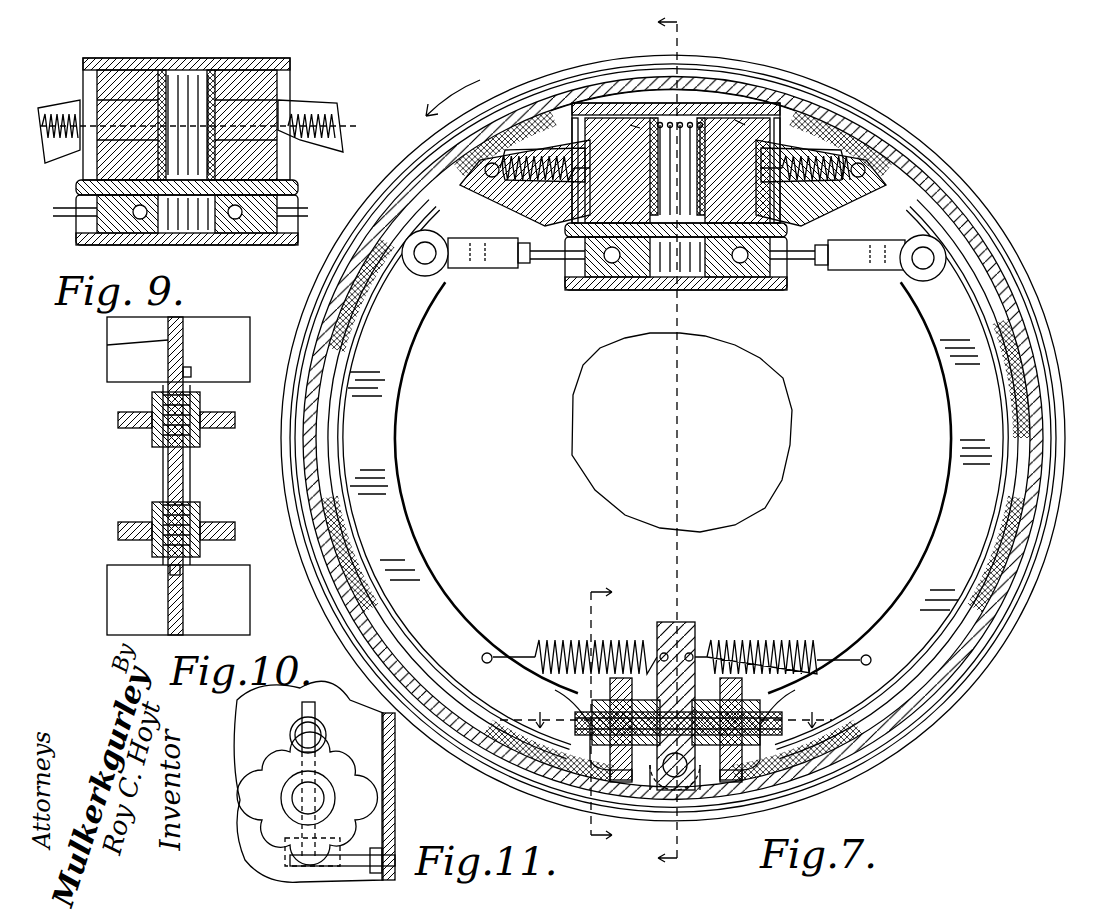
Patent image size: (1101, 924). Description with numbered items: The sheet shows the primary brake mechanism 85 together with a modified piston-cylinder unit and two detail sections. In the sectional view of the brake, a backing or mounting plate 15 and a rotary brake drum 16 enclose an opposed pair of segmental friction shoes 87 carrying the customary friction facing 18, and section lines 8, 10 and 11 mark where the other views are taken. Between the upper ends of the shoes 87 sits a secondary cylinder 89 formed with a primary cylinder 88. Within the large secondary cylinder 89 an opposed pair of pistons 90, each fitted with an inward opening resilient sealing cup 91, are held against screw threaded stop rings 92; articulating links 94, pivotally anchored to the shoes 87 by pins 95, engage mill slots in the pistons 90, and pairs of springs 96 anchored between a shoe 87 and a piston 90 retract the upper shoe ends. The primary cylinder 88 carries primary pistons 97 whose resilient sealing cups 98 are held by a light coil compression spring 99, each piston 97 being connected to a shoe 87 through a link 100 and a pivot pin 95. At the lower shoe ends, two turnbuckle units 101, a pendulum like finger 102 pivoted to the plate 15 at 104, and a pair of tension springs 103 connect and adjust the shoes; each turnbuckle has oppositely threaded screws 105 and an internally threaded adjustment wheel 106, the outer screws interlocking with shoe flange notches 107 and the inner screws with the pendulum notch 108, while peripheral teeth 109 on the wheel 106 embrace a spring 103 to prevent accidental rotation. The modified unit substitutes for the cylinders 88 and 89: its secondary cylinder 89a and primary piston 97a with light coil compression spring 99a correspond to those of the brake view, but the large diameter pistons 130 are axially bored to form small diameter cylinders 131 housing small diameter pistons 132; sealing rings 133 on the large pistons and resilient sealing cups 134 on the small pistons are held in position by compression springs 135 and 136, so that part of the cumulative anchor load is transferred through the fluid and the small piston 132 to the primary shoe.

In FIG. 7, the section line 8- 8 is at (681, 441).
In FIG. 7, the section line 10— 10 is at (800, 580).
In FIG. 7, the section line 11— 11 is at (590, 710).
In FIG. 7, the backing or mounting plate 15 is at (792, 470).
In FIG. 11, the backing or mounting plate 15 is at (396, 786).
In FIG. 7, the rotary brake drum 16 is at (320, 537).
In FIG. 7, the friction facing 18 is at (345, 330).
In FIG. 7, the brake mechanism 85 is at (952, 727).
In FIG. 7, the segmental friction shoes 87 is at (390, 440).
In FIG. 10, the segmental friction shoes 87 is at (107, 368).
In FIG. 7, the primary cylinder 88 is at (815, 183).
In FIG. 7, the secondary cylinder 89 is at (775, 100).
In FIG. 9, the secondary cylinder 89a is at (275, 65).
In FIG. 7, the pistons 90 is at (575, 208).
In FIG. 7, the resilient sealing cup 91 is at (630, 125).
In FIG. 7, the screw threaded stop rings 92 is at (572, 128).
In FIG. 7, the articulating links 94 is at (677, 186).
In FIG. 9, the articulating links 94 is at (58, 104).
In FIG. 7, the pins 95 is at (432, 262).
In FIG. 7, the springs 96 is at (510, 166).
In FIG. 9, the springs 96 is at (218, 126).
In FIG. 7, the primary pistons 97 is at (625, 290).
In FIG. 9, the primary piston 97a is at (140, 232).
In FIG. 7, the resilient sealing cups 98 is at (660, 292).
In FIG. 7, the light coil compression spring 99 is at (676, 292).
In FIG. 9, the light coil compression spring 99a is at (190, 232).
In FIG. 7, the link 100 is at (498, 270).
In FIG. 7, the turnbuckle units 101 is at (657, 646).
In FIG. 7, the pendulum like finger 102 is at (688, 622).
In FIG. 10, the pendulum like finger 102 is at (185, 486).
In FIG. 11, the pendulum like finger 102 is at (315, 712).
In FIG. 7, the tension springs 103 is at (565, 640).
In FIG. 11, the tension springs 103 is at (328, 734).
In FIG. 7, the pivot 104 is at (672, 778).
In FIG. 7, the screws 105 is at (615, 750).
In FIG. 10, the screws 105 is at (185, 425).
In FIG. 7, the adjustment wheel 106 is at (612, 778).
In FIG. 10, the adjustment wheel 106 is at (120, 425).
In FIG. 11, the adjustment wheel 106 is at (285, 758).
In FIG. 7, the notches 107 is at (598, 705).
In FIG. 10, the notches 107 is at (190, 375).
In FIG. 7, the notch 108 is at (698, 710).
In FIG. 10, the notch 108 is at (165, 468).
In FIG. 7, the teeth 109 is at (628, 782).
In FIG. 11, the teeth 109 is at (268, 798).
In FIG. 9, the large diameter pistons 130 is at (115, 78).
In FIG. 9, the small diameter cylinders 131 is at (82, 155).
In FIG. 9, the small diameter pistons 132 is at (166, 70).
In FIG. 9, the sealing rings 133 is at (200, 80).
In FIG. 9, the resilient sealing cups 134 is at (270, 95).
In FIG. 9, the compression spring 135 is at (250, 81).
In FIG. 9, the compression spring 136 is at (187, 120).